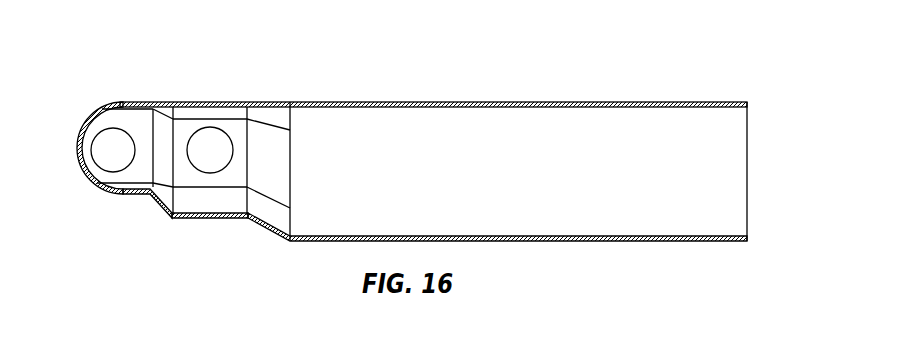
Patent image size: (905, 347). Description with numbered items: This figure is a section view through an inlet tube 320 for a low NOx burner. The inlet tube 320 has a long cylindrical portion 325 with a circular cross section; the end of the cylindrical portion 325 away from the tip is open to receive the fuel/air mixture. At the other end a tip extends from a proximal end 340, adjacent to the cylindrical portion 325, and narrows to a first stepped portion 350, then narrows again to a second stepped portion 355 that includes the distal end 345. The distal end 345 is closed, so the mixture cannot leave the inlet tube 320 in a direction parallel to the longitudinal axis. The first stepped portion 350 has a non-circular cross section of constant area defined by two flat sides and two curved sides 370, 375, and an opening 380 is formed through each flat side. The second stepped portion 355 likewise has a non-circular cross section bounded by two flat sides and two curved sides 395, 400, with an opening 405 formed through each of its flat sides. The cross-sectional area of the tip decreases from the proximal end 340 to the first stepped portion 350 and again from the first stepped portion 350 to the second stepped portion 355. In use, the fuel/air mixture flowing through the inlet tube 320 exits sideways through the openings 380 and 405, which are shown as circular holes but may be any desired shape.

The inlet tube 320 is at (725, 71).
The cylindrical portion 325 is at (563, 102).
The proximal end 340 is at (289, 240).
The distal end 345 is at (77, 145).
The first stepped portion 350 is at (200, 221).
The second stepped portion 355 is at (141, 198).
The curved side 370 is at (233, 102).
The curved side 375 is at (232, 220).
The opening 380 is at (205, 145).
The curved side 395 is at (130, 103).
The curved side 400 is at (124, 198).
The opening 405 is at (108, 145).